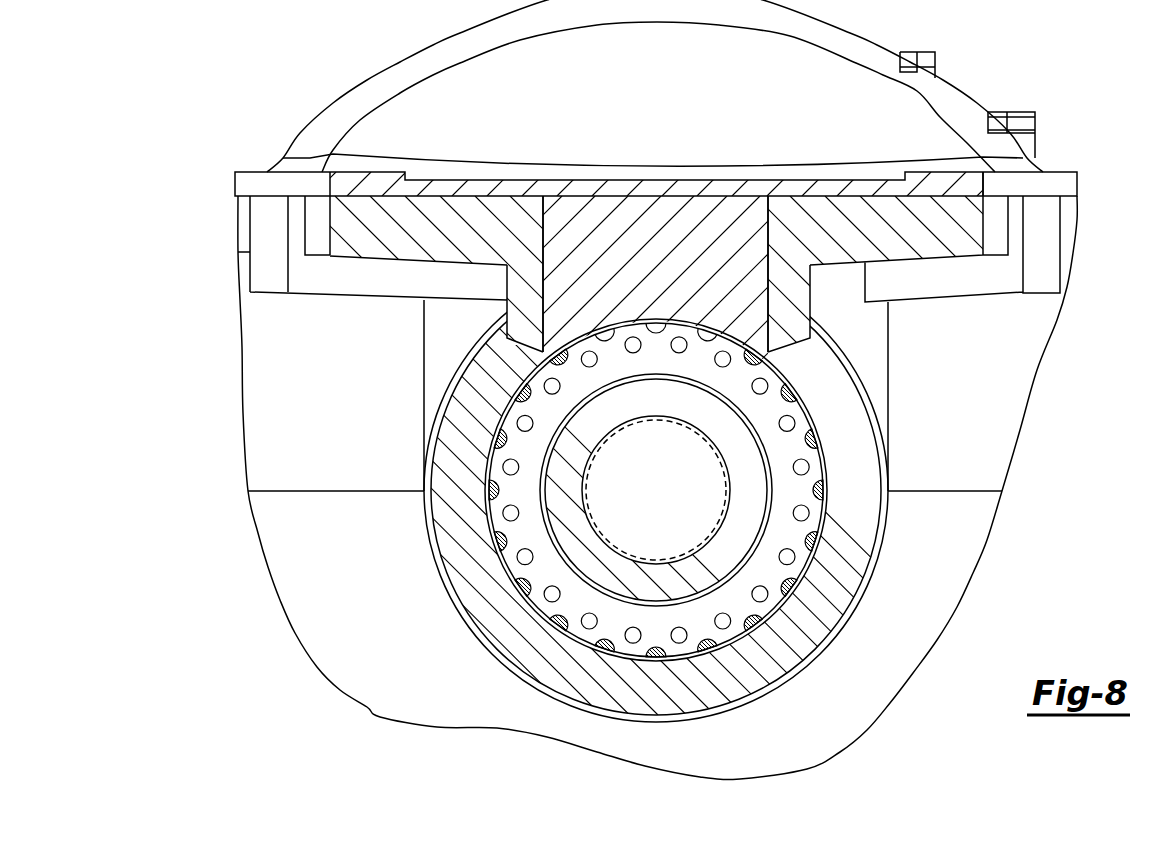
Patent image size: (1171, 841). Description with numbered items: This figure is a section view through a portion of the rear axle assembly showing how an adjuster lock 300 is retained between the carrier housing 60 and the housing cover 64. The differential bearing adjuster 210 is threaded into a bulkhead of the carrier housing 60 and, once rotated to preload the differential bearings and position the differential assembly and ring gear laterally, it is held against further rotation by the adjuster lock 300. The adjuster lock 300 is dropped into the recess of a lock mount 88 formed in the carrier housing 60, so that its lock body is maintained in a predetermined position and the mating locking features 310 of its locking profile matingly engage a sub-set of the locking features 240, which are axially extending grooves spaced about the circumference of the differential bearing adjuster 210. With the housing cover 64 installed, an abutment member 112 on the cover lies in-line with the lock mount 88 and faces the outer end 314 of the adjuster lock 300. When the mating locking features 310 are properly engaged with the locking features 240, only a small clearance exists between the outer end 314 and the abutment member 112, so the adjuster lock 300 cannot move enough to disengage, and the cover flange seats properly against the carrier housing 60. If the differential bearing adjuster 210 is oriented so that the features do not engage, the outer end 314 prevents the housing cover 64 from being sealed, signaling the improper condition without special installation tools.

The carrier housing 60 is at (348, 241).
The housing cover 64 is at (451, 188).
The lock mount 88 is at (768, 237).
The adjuster lock 300 is at (640, 249).
The outer end 314 is at (656, 249).
The abutment member 112 is at (706, 200).
The mating locking feature 310 is at (593, 490).
The locking feature 240 is at (662, 372).
The differential bearing adjuster 210 is at (811, 468).